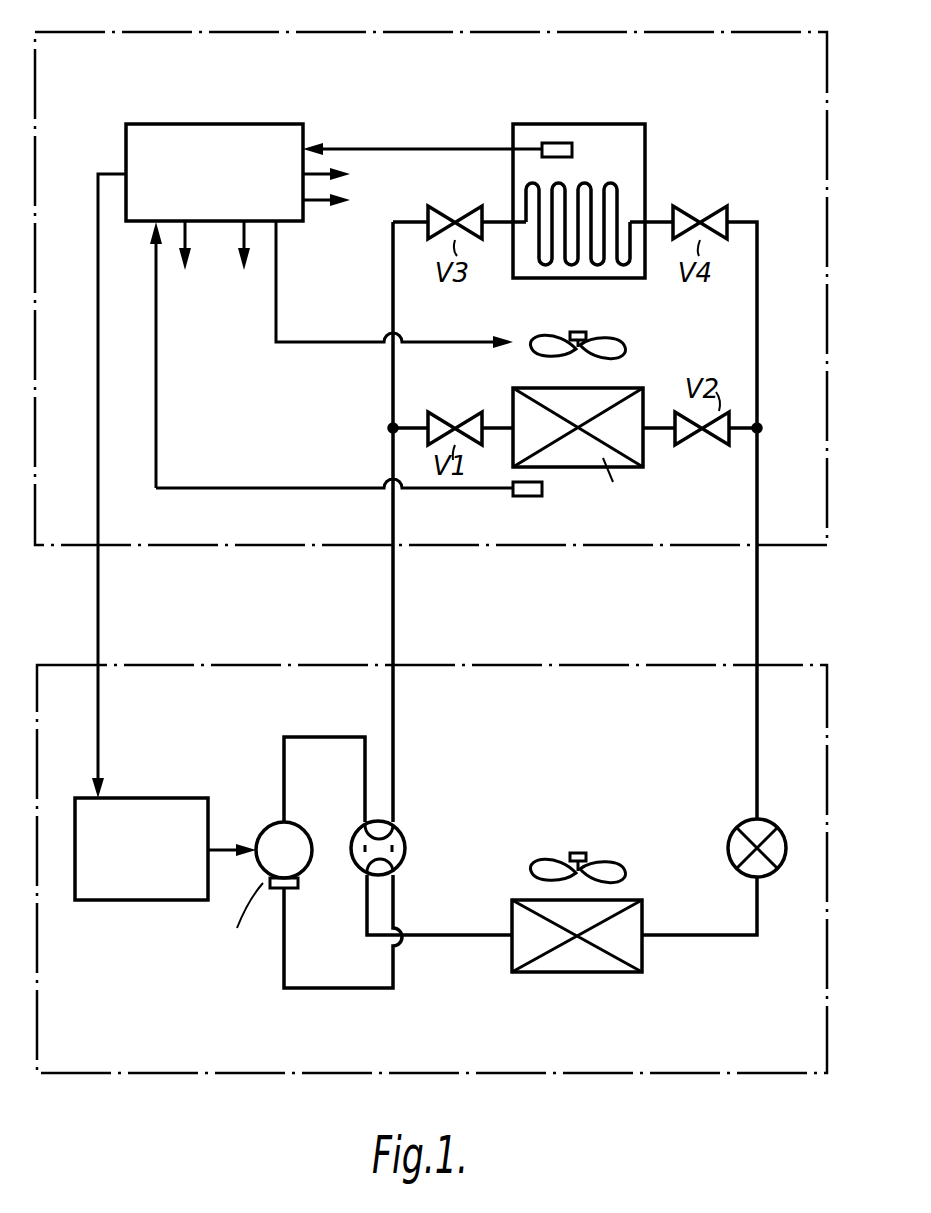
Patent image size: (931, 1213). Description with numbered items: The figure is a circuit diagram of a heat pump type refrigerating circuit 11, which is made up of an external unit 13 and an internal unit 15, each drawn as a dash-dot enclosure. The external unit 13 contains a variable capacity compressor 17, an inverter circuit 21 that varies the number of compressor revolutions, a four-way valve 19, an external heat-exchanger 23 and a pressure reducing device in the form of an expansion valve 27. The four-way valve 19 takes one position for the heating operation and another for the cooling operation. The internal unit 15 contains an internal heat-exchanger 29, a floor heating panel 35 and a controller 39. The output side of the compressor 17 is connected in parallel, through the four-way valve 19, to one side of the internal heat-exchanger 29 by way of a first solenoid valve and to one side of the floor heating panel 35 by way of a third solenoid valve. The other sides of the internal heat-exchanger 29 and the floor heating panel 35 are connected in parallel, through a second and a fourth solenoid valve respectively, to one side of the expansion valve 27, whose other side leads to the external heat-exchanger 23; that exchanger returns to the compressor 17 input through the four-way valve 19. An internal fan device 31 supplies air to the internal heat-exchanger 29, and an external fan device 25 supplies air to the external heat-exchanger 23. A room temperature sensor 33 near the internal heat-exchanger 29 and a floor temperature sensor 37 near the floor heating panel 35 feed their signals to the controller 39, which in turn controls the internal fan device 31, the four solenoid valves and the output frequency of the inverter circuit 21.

The heat pump type refrigerating circuit 11 is at (447, 552).
The external unit 13 is at (828, 865).
The internal unit 15 is at (828, 258).
The variable capacity compressor 17 is at (308, 837).
The four-way valve 19 is at (405, 845).
The inverter circuit 21 is at (193, 802).
The external heat-exchanger 23 is at (552, 972).
The external fan device 25 is at (580, 848).
The expansion valve 27 is at (746, 826).
The internal heat-exchanger 29 is at (512, 398).
The internal fan device 31 is at (625, 352).
The room temperature sensor 33 is at (527, 497).
The floor heating panel 35 is at (645, 142).
The floor temperature sensor 37 is at (557, 142).
The controller 39 is at (232, 127).